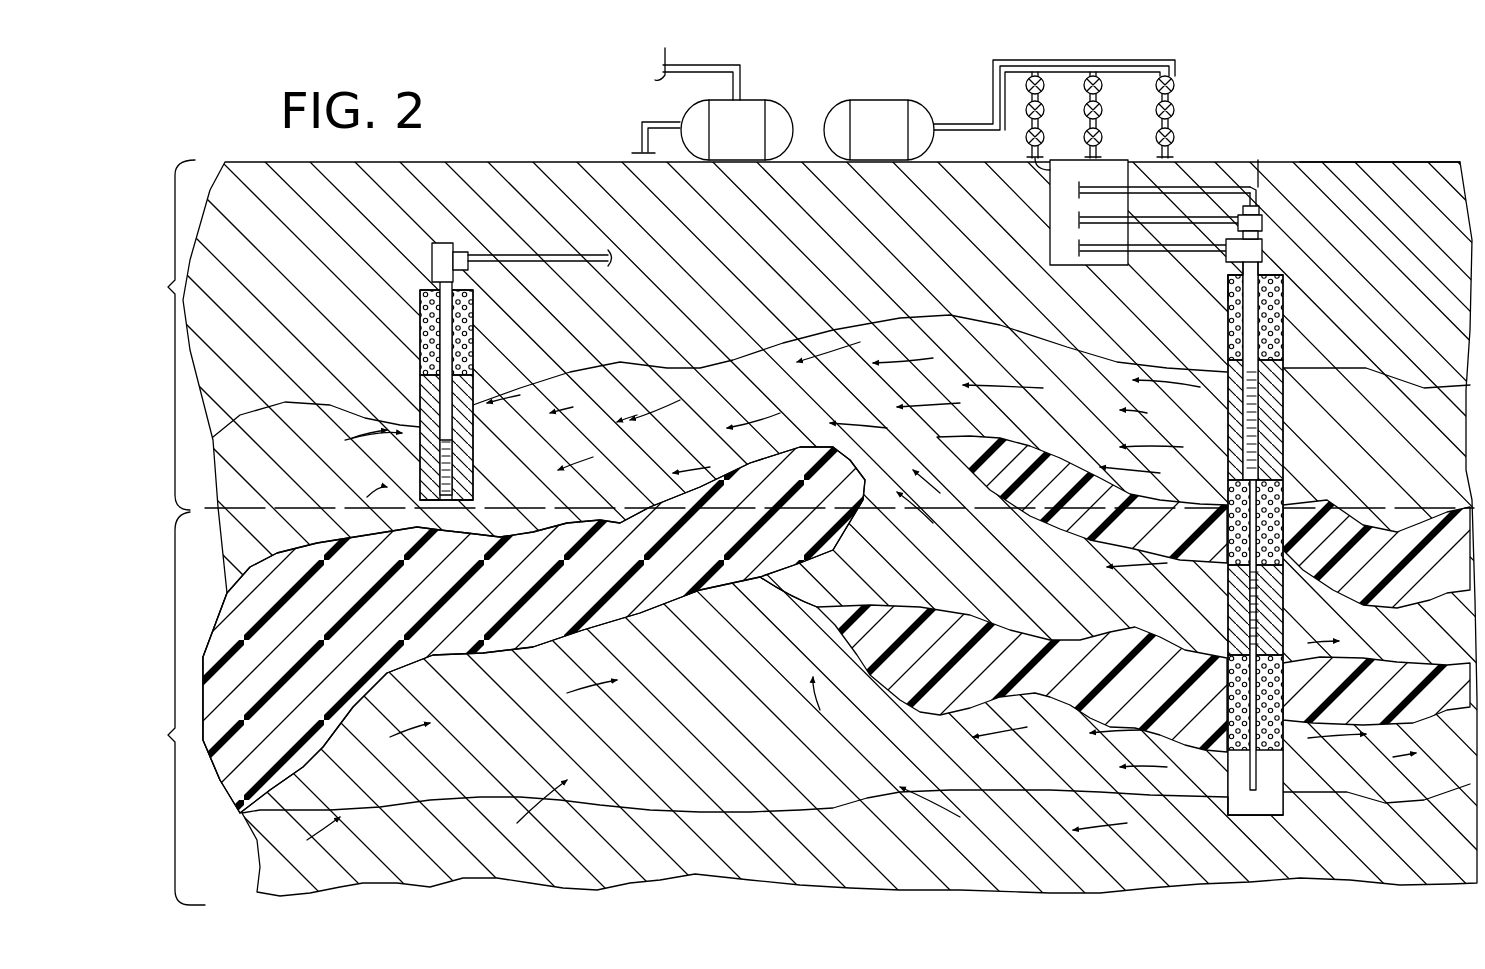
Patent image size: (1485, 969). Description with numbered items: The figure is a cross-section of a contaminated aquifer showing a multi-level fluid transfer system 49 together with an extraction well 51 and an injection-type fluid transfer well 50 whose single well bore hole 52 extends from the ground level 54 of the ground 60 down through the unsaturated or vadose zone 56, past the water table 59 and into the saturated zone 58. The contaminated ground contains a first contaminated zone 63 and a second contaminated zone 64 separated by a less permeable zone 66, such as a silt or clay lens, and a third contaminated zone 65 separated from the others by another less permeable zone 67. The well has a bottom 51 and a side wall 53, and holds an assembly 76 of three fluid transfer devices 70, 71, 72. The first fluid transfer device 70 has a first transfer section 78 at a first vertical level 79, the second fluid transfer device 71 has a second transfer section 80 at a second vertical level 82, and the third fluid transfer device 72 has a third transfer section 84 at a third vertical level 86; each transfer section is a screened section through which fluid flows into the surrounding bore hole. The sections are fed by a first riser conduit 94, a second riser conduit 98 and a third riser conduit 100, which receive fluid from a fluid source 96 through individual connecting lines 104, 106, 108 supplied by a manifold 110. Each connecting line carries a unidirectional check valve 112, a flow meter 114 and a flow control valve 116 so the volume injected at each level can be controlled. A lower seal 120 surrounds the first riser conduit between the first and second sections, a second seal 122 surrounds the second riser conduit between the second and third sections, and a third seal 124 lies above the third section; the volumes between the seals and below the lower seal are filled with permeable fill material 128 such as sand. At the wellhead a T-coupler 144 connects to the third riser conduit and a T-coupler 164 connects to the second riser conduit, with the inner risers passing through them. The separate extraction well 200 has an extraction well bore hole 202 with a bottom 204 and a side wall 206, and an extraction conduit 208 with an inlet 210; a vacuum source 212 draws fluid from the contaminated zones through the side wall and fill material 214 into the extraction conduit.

The multi-level fluid transfer system 49 is at (1262, 120).
The fluid transfer well 50 is at (1283, 332).
The bottom 51 is at (478, 324).
The well bore hole 52 is at (1228, 330).
The side wall 53 is at (1300, 364).
The ground level 54 is at (1368, 160).
The unsaturated or vadose zone 56 is at (168, 287).
The saturated zone 58 is at (168, 735).
The water table 59 is at (210, 500).
The ground 60 is at (455, 170).
The first level or zone of contaminated ground 63 is at (1065, 775).
The second level or zone of contaminated ground 64 is at (1060, 580).
The third level or zone of contaminated ground 65 is at (1188, 450).
The less permeable level or zone 66 is at (1118, 692).
The less permeable level or zone 67 is at (1148, 538).
The first fluid transfer device 70 is at (1283, 782).
The second fluid transfer device 71 is at (1312, 575).
The third fluid transfer device 72 is at (1283, 444).
The assembly 76 is at (1262, 228).
The first fluid discharge or transfer section 78 is at (1220, 800).
The first vertical level 79 is at (1283, 808).
The second fluid discharge or transfer section 80 is at (1312, 646).
The second vertical level 82 is at (1230, 592).
The third fluid discharge or transfer section 84 is at (1283, 402).
The third vertical level 86 is at (1218, 389).
The first riser conduit 94 is at (1285, 698).
The fluid source 96 is at (892, 115).
The second riser conduit 98 is at (1283, 498).
The third riser conduit 100 is at (1283, 292).
The connecting line 104 is at (1106, 266).
The connecting line 106 is at (1078, 248).
The connecting line 108 is at (1078, 190).
The manifold 110 is at (1155, 62).
The unidirectional check valve 112 is at (1106, 136).
The flow meter 114 is at (1042, 80).
The flow control valve 116 is at (1193, 111).
The lower seal 120 is at (1228, 668).
The second seal 122 is at (1228, 484).
The third seal 124 is at (1228, 290).
The fill material 128 is at (1350, 466).
The T-coupler 144 is at (1262, 251).
The T-coupler 164 is at (1262, 212).
The extraction well 200 is at (420, 325).
The extraction well bore hole 202 is at (478, 493).
The bottom 204 is at (446, 502).
The side wall 206 is at (478, 362).
The extraction conduit 208 is at (430, 385).
The inlet 210 is at (453, 462).
The vacuum source 212 is at (750, 105).
The fill material 214 is at (460, 432).